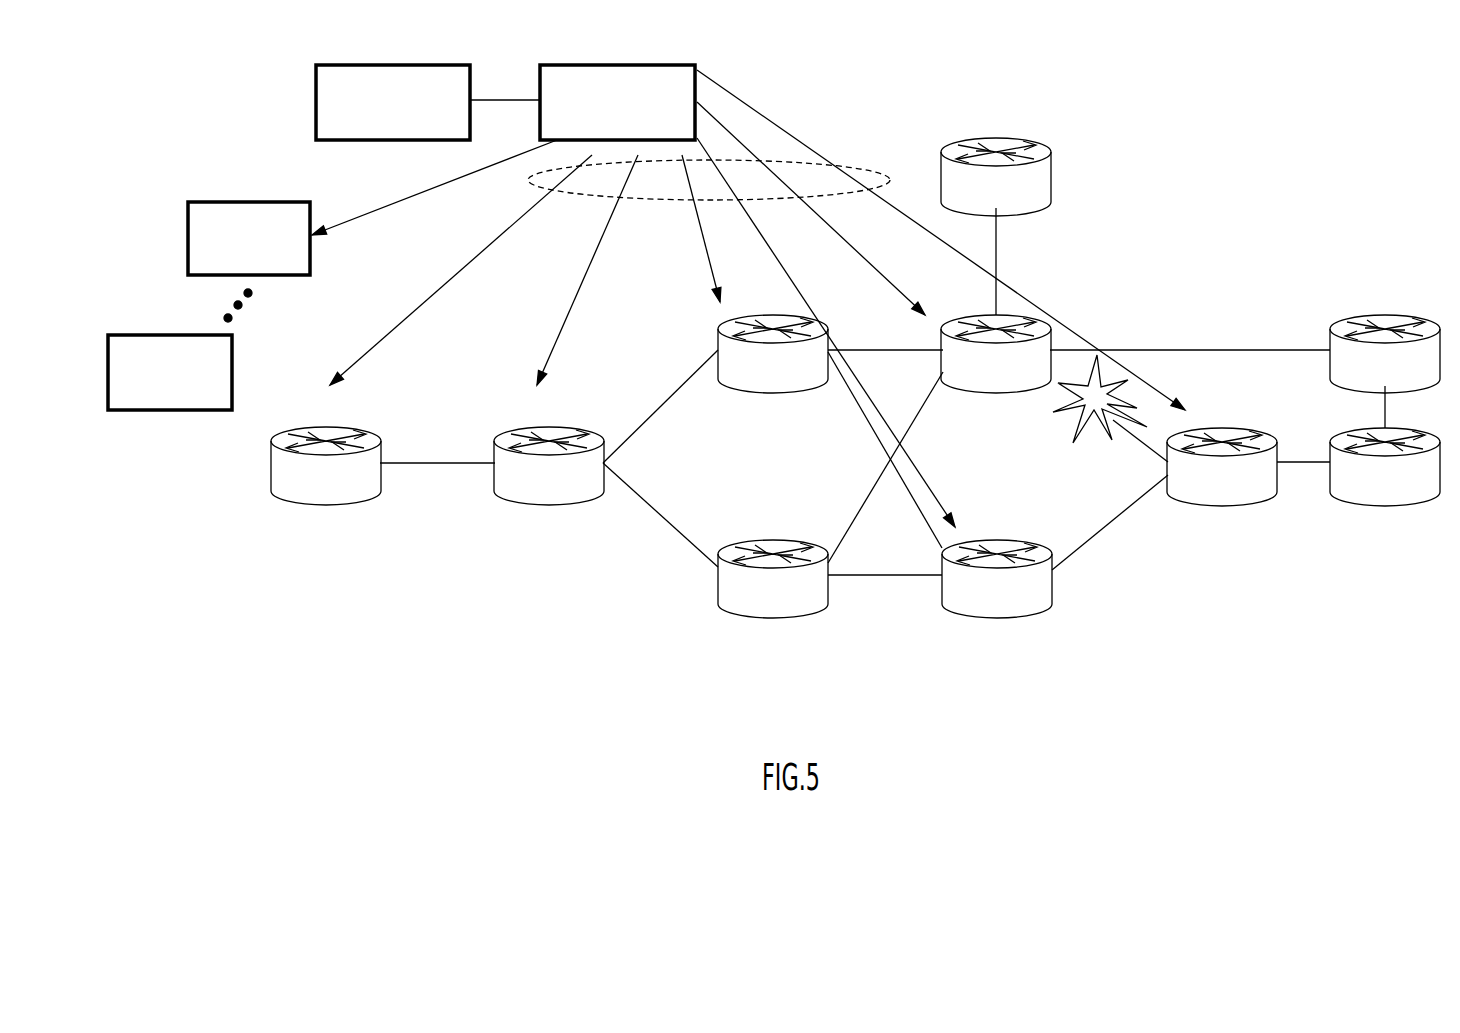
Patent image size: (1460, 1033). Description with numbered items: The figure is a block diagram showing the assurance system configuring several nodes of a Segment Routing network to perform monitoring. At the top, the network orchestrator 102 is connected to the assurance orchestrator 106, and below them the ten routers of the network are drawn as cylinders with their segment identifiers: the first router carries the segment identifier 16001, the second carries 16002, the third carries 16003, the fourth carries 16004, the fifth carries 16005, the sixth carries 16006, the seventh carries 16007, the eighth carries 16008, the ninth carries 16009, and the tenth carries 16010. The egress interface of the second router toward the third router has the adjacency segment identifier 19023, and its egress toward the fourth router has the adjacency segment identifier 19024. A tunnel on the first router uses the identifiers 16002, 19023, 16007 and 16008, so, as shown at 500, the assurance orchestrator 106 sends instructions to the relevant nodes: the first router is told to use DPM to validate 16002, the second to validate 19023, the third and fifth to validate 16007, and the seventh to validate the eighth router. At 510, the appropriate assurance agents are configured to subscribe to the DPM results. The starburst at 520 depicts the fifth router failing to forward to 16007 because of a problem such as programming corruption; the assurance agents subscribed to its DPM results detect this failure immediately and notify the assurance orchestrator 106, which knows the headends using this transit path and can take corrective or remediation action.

The network orchestrator 102 is at (407, 65).
The assurance orchestrator 106 is at (635, 65).
The DPM validation instructions 500 is at (871, 178).
The assurance agent subscription configuration 510 is at (397, 201).
The forwarding failure at R5 520 is at (1090, 425).
The segment identifier of R1 16001 is at (326, 452).
The segment identifier of R2 16002 is at (549, 452).
The segment identifier of R3 16003 is at (773, 338).
The segment identifier of R4 16004 is at (773, 563).
The segment identifier of R5 16005 is at (996, 338).
The segment identifier of R6 16006 is at (997, 563).
The segment identifier of R7 16007 is at (1222, 451).
The segment identifier of R8 16008 is at (1384, 451).
The segment identifier of R9 16009 is at (1384, 338).
The segment identifier of R10 16010 is at (996, 161).
The egress interface segment identifier of R2 toward R3 19023 is at (655, 406).
The egress interface segment identifier of R2 toward R4 19024 is at (655, 515).